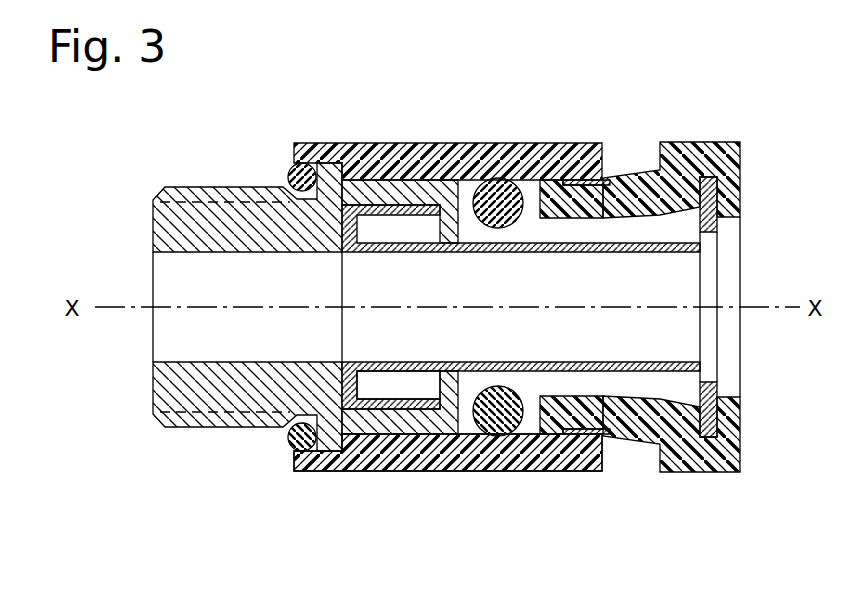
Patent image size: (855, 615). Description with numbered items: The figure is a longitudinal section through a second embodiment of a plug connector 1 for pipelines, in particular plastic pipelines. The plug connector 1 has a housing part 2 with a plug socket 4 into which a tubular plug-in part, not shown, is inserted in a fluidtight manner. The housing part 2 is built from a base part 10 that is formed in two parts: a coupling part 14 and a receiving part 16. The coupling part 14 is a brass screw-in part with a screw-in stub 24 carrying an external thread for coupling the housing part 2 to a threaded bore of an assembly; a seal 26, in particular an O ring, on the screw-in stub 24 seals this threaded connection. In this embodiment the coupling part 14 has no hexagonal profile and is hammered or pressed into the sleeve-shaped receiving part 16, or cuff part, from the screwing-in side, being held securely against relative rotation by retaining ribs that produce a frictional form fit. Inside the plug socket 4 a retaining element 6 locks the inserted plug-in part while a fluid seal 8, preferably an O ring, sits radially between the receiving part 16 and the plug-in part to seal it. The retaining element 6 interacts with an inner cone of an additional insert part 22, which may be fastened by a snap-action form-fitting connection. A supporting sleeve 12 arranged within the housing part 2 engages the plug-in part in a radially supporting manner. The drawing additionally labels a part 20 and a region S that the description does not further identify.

The plug connector 1 is at (652, 503).
The housing part 2 is at (443, 440).
The plug socket 4 is at (632, 223).
The retaining element 6 is at (553, 185).
The fluid seal 8 is at (487, 188).
The base part 10 is at (740, 150).
The supporting sleeve 12 is at (377, 213).
The coupling part 14 is at (272, 232).
The receiving part 16 is at (410, 165).
The sleeve lower part 20 is at (373, 450).
The insert part 22 is at (623, 232).
The screw-in stub 24 is at (223, 402).
The seal 26 is at (290, 448).
The gap S is at (395, 422).